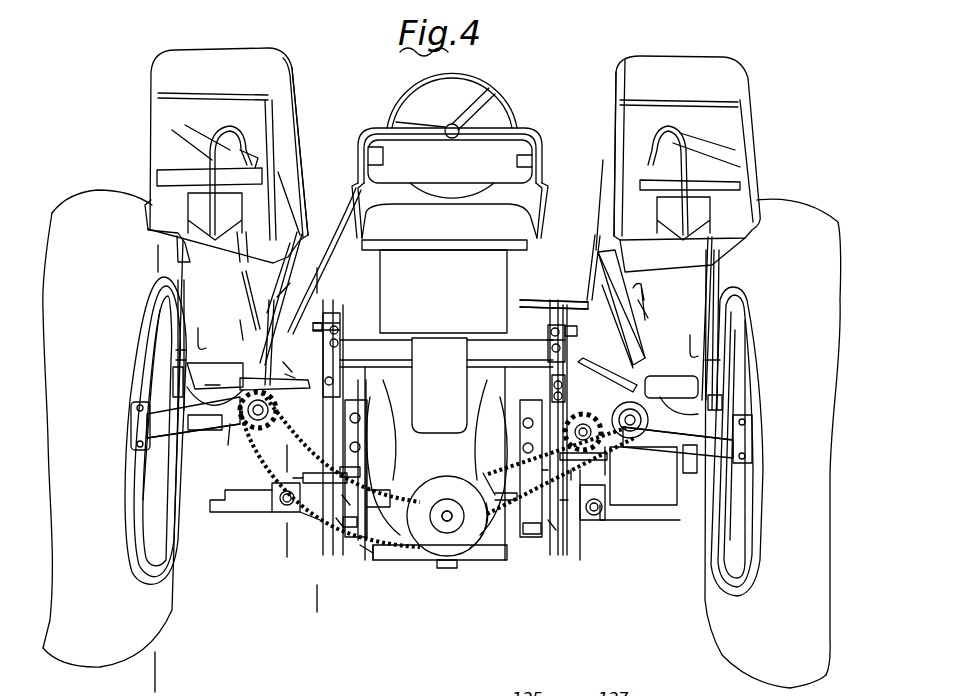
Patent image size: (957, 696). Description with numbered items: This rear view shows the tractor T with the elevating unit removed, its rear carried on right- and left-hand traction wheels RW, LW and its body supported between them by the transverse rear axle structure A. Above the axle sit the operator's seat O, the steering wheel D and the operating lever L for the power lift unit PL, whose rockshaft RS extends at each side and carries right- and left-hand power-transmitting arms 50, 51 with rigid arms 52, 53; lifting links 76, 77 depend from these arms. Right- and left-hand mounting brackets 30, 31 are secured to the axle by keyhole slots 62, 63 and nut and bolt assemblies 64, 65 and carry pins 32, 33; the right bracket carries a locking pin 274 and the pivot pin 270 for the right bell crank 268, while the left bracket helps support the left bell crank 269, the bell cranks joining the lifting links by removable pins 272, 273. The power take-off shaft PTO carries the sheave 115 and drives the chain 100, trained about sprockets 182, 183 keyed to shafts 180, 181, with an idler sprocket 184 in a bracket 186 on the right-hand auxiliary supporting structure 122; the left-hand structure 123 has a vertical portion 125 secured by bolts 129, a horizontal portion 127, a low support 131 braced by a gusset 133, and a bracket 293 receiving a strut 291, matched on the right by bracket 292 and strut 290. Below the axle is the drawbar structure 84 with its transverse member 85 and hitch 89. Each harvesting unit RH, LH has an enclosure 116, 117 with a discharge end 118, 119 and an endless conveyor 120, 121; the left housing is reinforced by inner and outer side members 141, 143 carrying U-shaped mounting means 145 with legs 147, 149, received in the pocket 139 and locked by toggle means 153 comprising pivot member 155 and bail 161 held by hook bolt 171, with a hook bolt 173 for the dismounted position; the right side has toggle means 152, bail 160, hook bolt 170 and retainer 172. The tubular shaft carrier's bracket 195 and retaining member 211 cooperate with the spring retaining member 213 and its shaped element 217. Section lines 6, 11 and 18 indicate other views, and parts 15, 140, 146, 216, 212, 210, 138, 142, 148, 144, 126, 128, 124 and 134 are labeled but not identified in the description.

The left-hand harvesting unit LH is at (209, 62).
The right-hand harvesting unit RH is at (675, 64).
The left-hand traction wheel LW is at (97, 196).
The right-hand traction wheel RW is at (795, 201).
The steering wheel D is at (477, 74).
The tractor T is at (523, 110).
The operator's seat O is at (545, 149).
The operating lever L is at (342, 196).
The power lift unit PL is at (437, 346).
The power lift rockshaft RS is at (547, 325).
The rear axle structure A is at (436, 461).
The power take-off shaft PTO is at (447, 528).
The upper discharge end 119 is at (165, 96).
The endless conveyor 121 is at (212, 138).
The elevator housing 117 is at (300, 156).
The upper discharge end 118 is at (738, 107).
The endless conveyor 120 is at (690, 145).
The sheet metal enclosure 116 is at (612, 190).
The section line 11 is at (172, 259).
The section line 6 is at (334, 280).
The section line 18 is at (300, 467).
The outer side member 143 is at (187, 318).
The upright leg 149 is at (178, 356).
The U-shaped mounting means 145 is at (176, 360).
The toggle locking means 153 is at (172, 379).
The bail 161 is at (150, 402).
The pocket 139 is at (210, 374).
The hook bolt 171 is at (198, 404).
The transverse pivot member 155 is at (213, 387).
The hook bolt 173 is at (201, 333).
The rod 15 is at (241, 324).
The retaining member 213 is at (249, 296).
The spring element 217 is at (268, 306).
The inner side member 141 is at (286, 316).
The arm 53 is at (316, 323).
The upright leg 147 is at (268, 352).
The left-hand power-transmitting arm 51 is at (288, 366).
The tunnel bracket 195 is at (290, 374).
The shaft 181 is at (262, 406).
The horizontal portion 127 is at (193, 417).
The retaining member 211 is at (205, 423).
The auxiliary supporting structure 123 is at (211, 440).
The vertical portion 125 is at (233, 442).
The bolts 129 is at (270, 445).
The gusset 133 is at (274, 485).
The bracket 293 is at (276, 506).
The strut 291 is at (290, 511).
The bell crank 269 is at (303, 523).
The lower support 131 is at (292, 478).
The driving sprocket 183 is at (291, 430).
The lifting link 77 is at (347, 500).
The removable pin 273 is at (340, 524).
The pin 33 is at (367, 551).
The rear drawbar structure 84 is at (380, 560).
The chain 100 is at (403, 555).
The transverse rear member 85 is at (428, 561).
The hitch 89 is at (450, 536).
The sheave 115 is at (468, 545).
The left-hand mounting bracket 31 is at (372, 403).
The nut and bolt assemblies 65 is at (360, 419).
The keyhole slots 63 is at (360, 447).
The right-hand mounting bracket 30 is at (518, 410).
The nut and bolt assemblies 64 is at (523, 423).
The keyhole slots 62 is at (523, 447).
The pivot pin 270 is at (538, 476).
The locking pin 274 is at (520, 474).
The pin 32 is at (533, 537).
The right lever 140 is at (598, 262).
The arm 52 is at (572, 326).
The support 146 is at (625, 340).
The right-hand power-transmitting arm 50 is at (567, 347).
The bracket 186 is at (590, 364).
The shaft 180 is at (627, 404).
The chain sprocket 182 is at (623, 418).
The hook 216 is at (642, 288).
The rod 212 is at (646, 311).
The retainer 172 is at (691, 333).
The arm 210 is at (643, 351).
The plate 138 is at (680, 364).
The wheel rim 142 is at (710, 307).
The strap 148 is at (713, 352).
The strap 144 is at (721, 360).
The toggle locking means 152 is at (720, 402).
The bail 160 is at (750, 435).
The hook bolt 170 is at (673, 431).
The right axle tube 126 is at (698, 437).
The bracket 128 is at (623, 450).
The bracket 124 is at (688, 441).
The auxiliary supporting structure 122 is at (670, 446).
The bracket 134 is at (600, 471).
The idler sprocket 184 is at (572, 472).
The bracket 292 is at (612, 513).
The strut 290 is at (595, 515).
The bell crank 268 is at (613, 490).
The lifting link 76 is at (568, 505).
The removable connection 272 is at (562, 525).